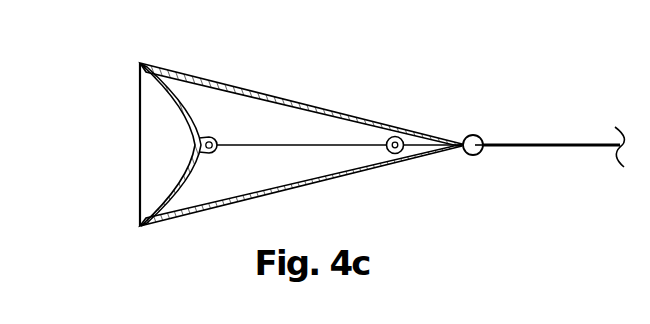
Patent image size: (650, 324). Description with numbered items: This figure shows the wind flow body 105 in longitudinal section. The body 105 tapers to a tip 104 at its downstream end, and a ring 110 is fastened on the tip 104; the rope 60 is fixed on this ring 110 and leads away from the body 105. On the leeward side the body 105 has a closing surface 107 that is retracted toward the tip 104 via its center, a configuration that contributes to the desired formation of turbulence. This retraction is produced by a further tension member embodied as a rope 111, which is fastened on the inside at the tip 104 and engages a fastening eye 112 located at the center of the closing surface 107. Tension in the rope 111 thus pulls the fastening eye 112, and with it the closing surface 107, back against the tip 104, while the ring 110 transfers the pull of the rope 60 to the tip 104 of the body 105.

The body 105 is at (113, 77).
The leeward closing surface 107 is at (155, 163).
The fastening eye 112 is at (205, 136).
The rope 111 is at (290, 145).
The tip 104 is at (449, 163).
The ring 110 is at (471, 135).
The rope 60 is at (583, 141).